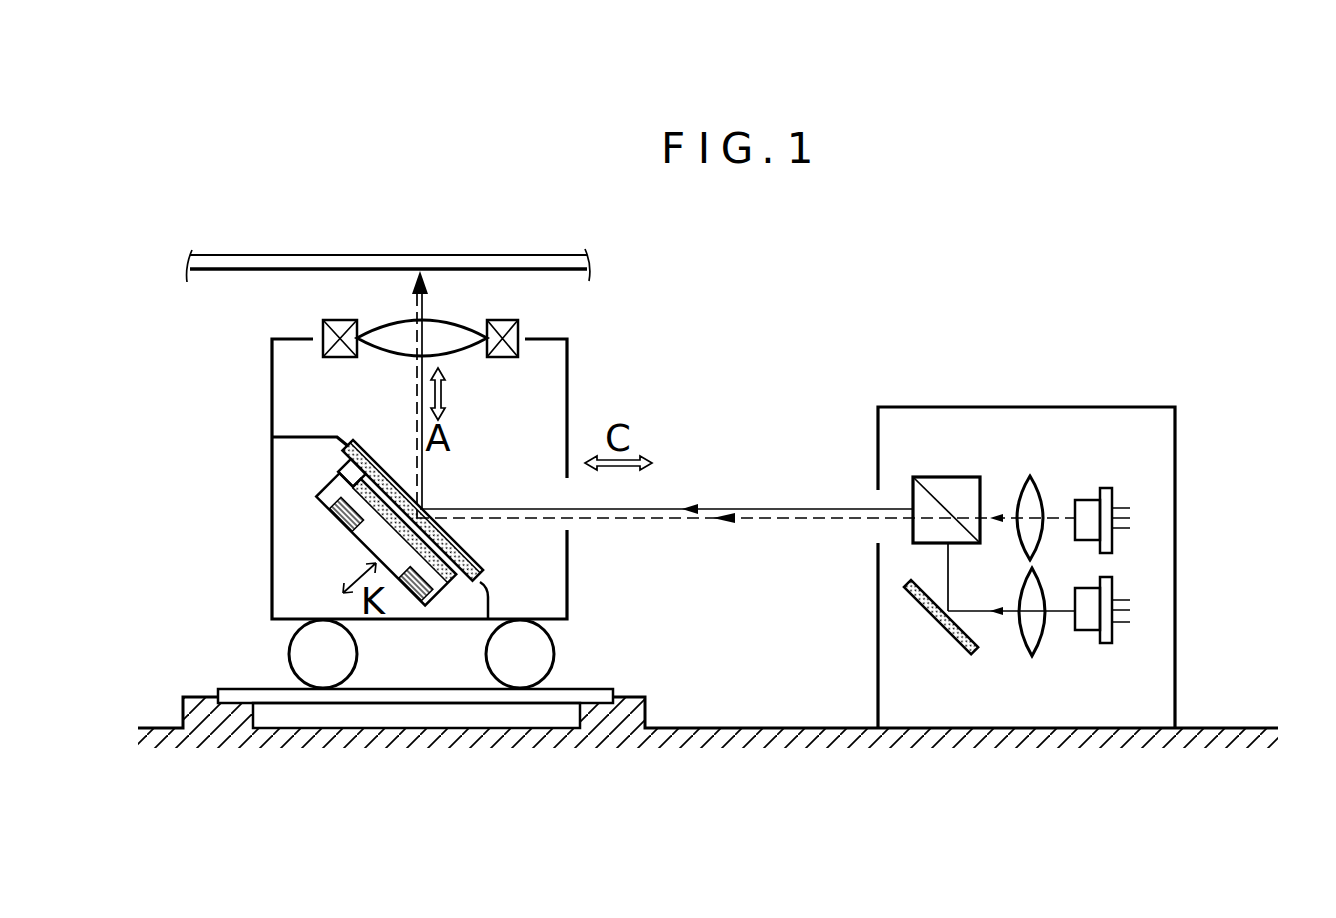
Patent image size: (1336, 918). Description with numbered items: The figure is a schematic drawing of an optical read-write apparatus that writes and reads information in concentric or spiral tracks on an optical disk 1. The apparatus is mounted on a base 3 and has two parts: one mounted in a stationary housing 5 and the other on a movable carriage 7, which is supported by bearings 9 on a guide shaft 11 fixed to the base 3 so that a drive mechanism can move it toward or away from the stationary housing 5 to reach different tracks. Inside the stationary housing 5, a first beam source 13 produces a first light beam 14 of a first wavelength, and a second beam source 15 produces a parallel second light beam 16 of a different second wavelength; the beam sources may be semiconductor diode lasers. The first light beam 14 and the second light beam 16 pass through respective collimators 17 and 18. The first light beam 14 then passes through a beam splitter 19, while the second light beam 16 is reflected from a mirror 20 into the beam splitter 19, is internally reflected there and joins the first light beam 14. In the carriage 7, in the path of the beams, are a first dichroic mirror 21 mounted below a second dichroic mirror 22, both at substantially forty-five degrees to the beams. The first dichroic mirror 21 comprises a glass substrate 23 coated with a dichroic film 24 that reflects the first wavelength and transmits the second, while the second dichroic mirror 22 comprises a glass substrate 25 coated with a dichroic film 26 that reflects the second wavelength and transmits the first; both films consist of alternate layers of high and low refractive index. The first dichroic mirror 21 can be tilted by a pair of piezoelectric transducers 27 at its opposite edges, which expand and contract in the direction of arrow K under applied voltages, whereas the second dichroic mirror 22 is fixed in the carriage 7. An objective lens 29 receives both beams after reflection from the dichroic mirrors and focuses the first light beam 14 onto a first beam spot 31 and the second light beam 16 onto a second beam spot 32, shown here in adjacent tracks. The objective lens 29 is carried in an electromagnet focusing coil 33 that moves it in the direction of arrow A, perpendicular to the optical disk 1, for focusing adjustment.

The optical disk 1 is at (516, 255).
The base 3 is at (1230, 727).
The stationary housing 5 is at (1126, 407).
The movable carriage 7 is at (568, 396).
The bearings 9 is at (325, 688).
The guide shaft 11 is at (232, 688).
The first beam source 13 is at (1113, 492).
The first light beam 14 is at (769, 520).
The second beam source 15 is at (1113, 582).
The second light beam 16 is at (770, 509).
The collimator 17 is at (1036, 477).
The collimator 18 is at (1034, 657).
The beam splitter 19 is at (935, 477).
The mirror 20 is at (966, 645).
The first dichroic mirror 21 is at (348, 481).
The second dichroic mirror 22 is at (489, 582).
The glass substrate 23 is at (337, 502).
The dichroic film 24 is at (350, 462).
The glass substrate 25 is at (485, 570).
The dichroic film 26 is at (468, 553).
The piezoelectric transducers 27 is at (338, 520).
The objective lens 29 is at (462, 322).
The first beam spot 31 is at (415, 266).
The second beam spot 32 is at (421, 268).
The electromagnet focusing coil 33 is at (323, 322).